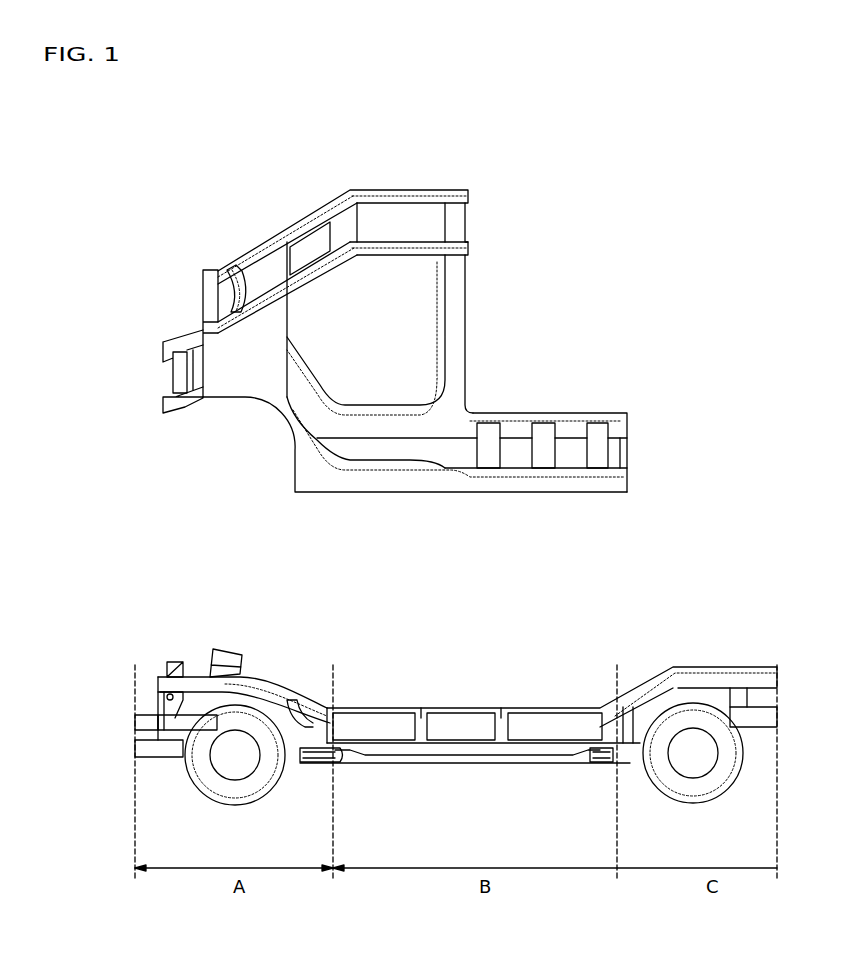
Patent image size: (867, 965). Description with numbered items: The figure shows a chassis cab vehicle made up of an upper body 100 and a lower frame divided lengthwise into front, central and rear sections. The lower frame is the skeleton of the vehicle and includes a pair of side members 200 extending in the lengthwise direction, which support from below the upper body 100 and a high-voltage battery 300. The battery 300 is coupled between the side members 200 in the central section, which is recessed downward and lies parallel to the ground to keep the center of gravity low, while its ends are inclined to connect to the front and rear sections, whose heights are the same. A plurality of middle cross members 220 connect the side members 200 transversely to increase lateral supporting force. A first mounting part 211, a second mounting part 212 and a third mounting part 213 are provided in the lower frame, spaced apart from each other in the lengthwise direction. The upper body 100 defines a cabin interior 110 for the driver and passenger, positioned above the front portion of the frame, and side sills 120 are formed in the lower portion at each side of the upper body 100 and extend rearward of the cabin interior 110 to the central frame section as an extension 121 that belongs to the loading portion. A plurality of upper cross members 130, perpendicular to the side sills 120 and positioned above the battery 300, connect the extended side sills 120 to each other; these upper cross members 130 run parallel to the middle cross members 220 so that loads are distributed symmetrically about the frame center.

The upper body 100 is at (334, 174).
The cabin interior 110 is at (428, 289).
The side sills 120 is at (383, 410).
The extension 121 is at (633, 415).
The upper cross members 130 is at (600, 428).
The side members 200 is at (540, 716).
The first mounting part 211 is at (170, 664).
The second mounting part 212 is at (318, 705).
The third mounting part 213 is at (603, 700).
The middle cross members 220 is at (502, 712).
The battery 300 is at (375, 722).